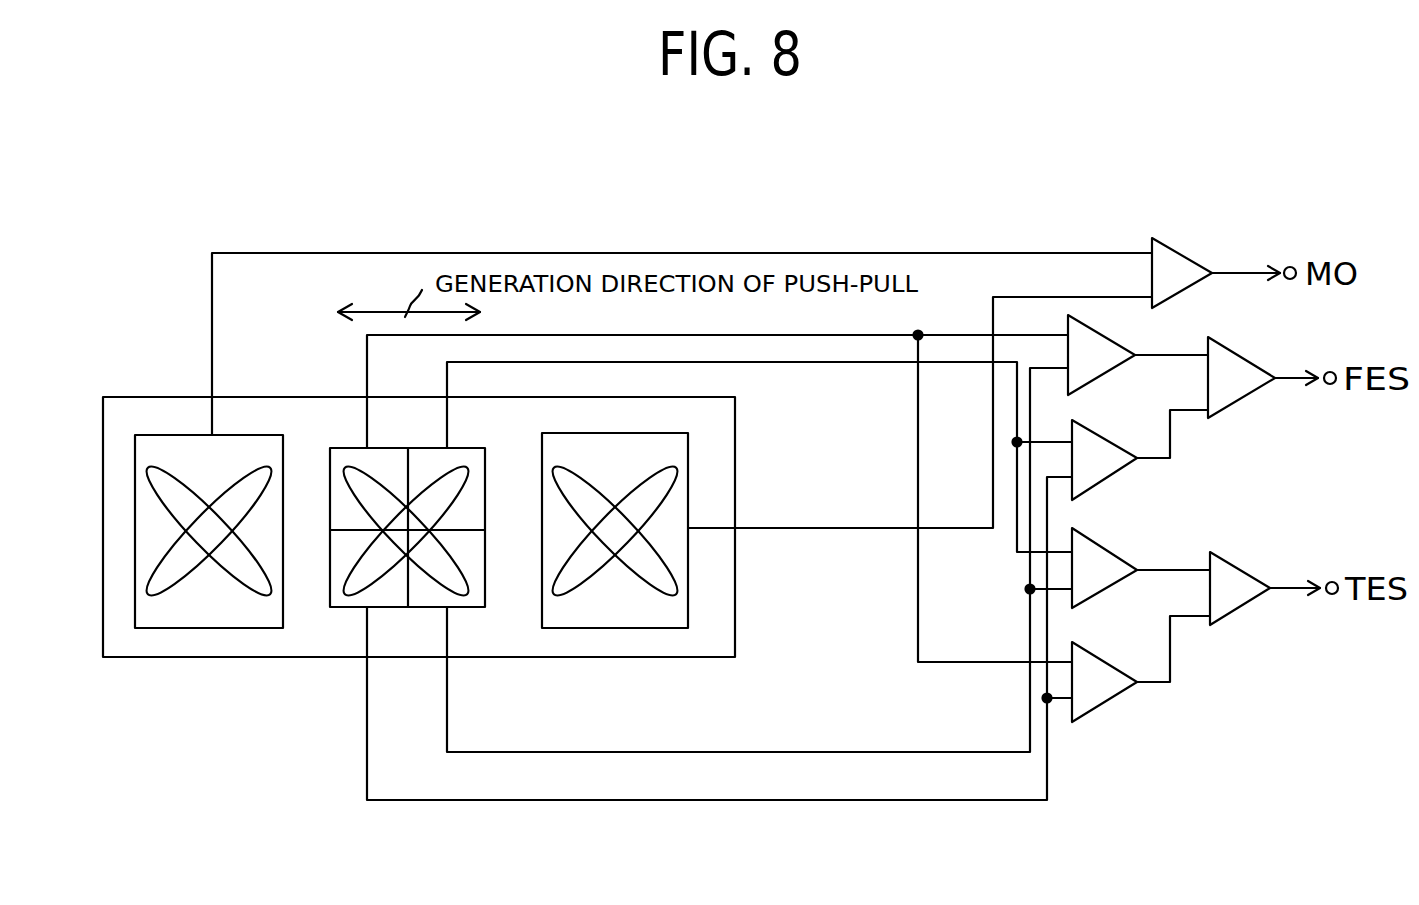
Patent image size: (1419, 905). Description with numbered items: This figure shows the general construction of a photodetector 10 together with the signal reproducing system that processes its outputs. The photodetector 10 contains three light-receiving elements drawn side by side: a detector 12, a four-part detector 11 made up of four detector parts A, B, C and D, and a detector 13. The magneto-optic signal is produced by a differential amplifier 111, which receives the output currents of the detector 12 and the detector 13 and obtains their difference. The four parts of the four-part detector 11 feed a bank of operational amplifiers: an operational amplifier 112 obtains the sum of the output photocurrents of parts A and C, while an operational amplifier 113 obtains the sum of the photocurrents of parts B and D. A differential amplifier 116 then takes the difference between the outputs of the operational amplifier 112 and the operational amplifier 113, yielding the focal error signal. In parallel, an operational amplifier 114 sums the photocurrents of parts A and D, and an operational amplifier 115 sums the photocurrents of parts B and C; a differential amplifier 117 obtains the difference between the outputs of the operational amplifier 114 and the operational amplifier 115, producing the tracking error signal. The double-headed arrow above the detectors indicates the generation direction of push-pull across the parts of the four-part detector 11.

The photodetector 10 is at (735, 637).
The 4-part detector 11 is at (468, 607).
The detector 12 is at (185, 435).
The detector 13 is at (688, 445).
The differential amplifier 111 is at (1192, 262).
The operational amplifier 112 is at (1135, 320).
The operational amplifier 113 is at (1117, 447).
The operational amplifier 114 is at (1127, 640).
The operational amplifier 115 is at (1107, 553).
The differential amplifier 116 is at (1253, 360).
The differential amplifier 117 is at (1253, 570).